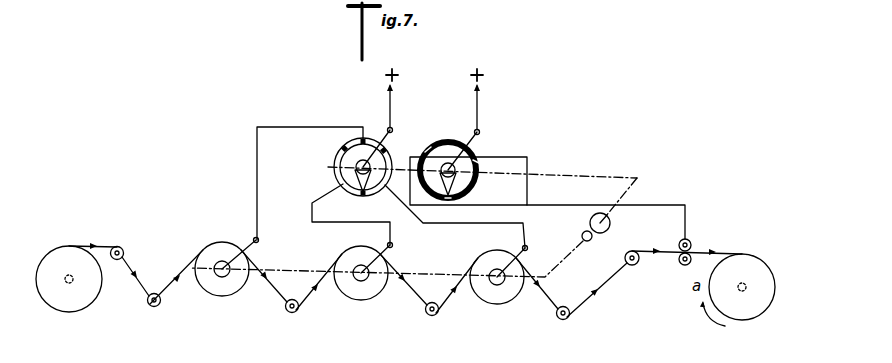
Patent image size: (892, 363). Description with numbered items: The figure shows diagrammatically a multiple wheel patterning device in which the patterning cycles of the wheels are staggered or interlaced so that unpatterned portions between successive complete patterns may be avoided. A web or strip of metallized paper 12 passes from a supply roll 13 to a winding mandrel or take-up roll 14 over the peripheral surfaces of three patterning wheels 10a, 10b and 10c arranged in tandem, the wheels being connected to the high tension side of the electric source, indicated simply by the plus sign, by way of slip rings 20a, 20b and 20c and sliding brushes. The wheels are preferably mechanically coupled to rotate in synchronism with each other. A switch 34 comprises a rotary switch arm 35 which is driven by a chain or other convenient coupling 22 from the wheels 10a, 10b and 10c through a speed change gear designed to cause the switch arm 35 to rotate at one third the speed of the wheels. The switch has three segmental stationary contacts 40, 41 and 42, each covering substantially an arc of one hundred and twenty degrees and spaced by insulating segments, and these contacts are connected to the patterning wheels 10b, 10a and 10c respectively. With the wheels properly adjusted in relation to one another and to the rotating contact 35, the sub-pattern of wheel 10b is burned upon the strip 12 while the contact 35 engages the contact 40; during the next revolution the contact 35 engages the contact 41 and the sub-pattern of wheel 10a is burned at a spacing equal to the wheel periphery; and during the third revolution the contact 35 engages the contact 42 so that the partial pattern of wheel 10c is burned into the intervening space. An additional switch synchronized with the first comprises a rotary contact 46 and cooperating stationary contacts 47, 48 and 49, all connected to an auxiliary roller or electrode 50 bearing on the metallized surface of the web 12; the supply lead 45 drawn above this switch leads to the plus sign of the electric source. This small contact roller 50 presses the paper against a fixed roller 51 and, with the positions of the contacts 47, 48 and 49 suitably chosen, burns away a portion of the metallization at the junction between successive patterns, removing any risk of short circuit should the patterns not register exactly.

The supply roll 13 is at (69, 312).
The web or strip of metallized paper 12 is at (137, 281).
The patterning wheel 10a is at (243, 257).
The patterning wheel 10b is at (378, 262).
The patterning wheel 10c is at (512, 266).
The slip ring 20a is at (222, 276).
The slip ring 20b is at (361, 280).
The slip ring 20c is at (497, 284).
The segmental stationary contact 41 is at (300, 187).
The switch 34 is at (375, 132).
The rotary switch arm 35 is at (355, 166).
The segmental stationary contact 40 is at (478, 228).
The segmental stationary contact 42 is at (387, 187).
The stationary contact 48 is at (429, 150).
The rotary contact 46 is at (453, 162).
The supply lead 45 is at (452, 118).
The stationary contact 47 is at (449, 200).
The stationary contact 49 is at (477, 165).
The coupling 22 is at (610, 159).
The auxiliary roller or electrode 50 is at (690, 242).
The fixed roller 51 is at (684, 266).
The winding mandrel or take-up roll 14 is at (760, 254).